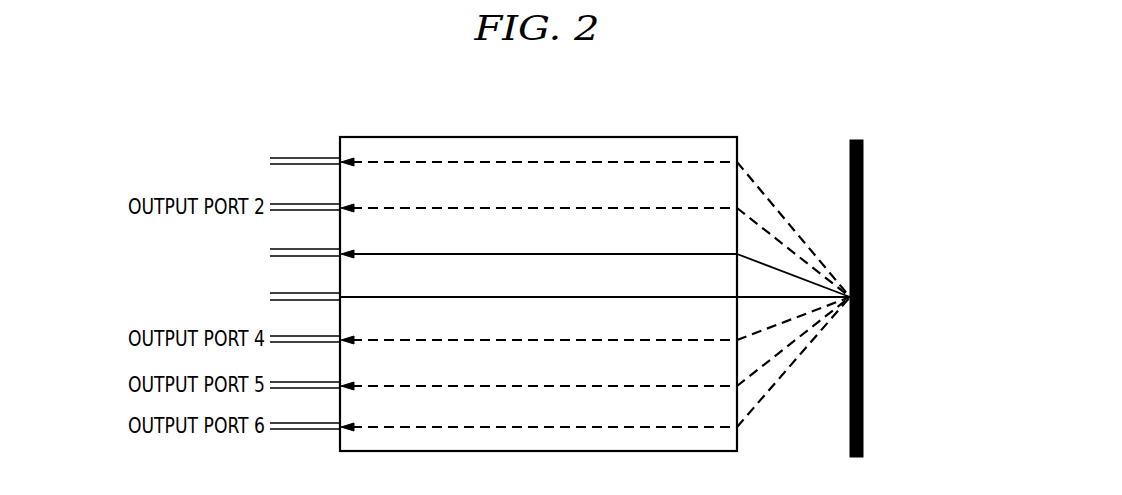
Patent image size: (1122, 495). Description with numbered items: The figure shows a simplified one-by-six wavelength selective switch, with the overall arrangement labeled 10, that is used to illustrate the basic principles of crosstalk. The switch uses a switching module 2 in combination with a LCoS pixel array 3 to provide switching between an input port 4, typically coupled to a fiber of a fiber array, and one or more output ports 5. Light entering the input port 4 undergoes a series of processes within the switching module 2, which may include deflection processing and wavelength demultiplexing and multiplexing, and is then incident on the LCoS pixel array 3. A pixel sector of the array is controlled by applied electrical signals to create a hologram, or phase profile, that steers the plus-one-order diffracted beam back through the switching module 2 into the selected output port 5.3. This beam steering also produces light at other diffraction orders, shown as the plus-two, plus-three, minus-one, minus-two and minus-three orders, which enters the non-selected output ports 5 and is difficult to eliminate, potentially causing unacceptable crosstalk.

The optical switching device 10 is at (716, 99).
The switching module 2 is at (563, 138).
The LCoS pixel array 3 is at (864, 167).
The input port 4 is at (338, 293).
The output ports 5 is at (338, 157).
The output port 5.3 is at (338, 249).